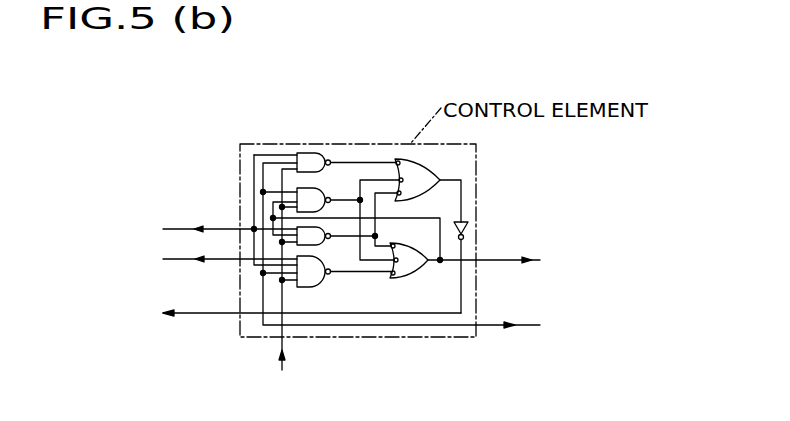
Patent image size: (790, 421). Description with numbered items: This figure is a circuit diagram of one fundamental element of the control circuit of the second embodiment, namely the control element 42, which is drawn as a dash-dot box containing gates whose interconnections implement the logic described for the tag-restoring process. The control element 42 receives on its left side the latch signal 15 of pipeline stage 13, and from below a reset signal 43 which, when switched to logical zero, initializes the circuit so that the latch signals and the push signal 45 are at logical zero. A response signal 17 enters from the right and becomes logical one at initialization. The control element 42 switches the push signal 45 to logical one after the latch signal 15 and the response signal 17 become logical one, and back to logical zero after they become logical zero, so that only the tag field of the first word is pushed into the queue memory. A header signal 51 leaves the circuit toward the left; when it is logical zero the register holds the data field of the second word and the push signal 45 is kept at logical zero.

The control element 42 is at (322, 143).
The push signal 45 is at (510, 256).
The reset signal 43 is at (288, 360).
The response signal 17 is at (520, 330).
The latch signal 15 is at (177, 228).
The latch signal subscript (pipeline stage index) 13 is at (230, 219).
The header signal 51 is at (192, 261).